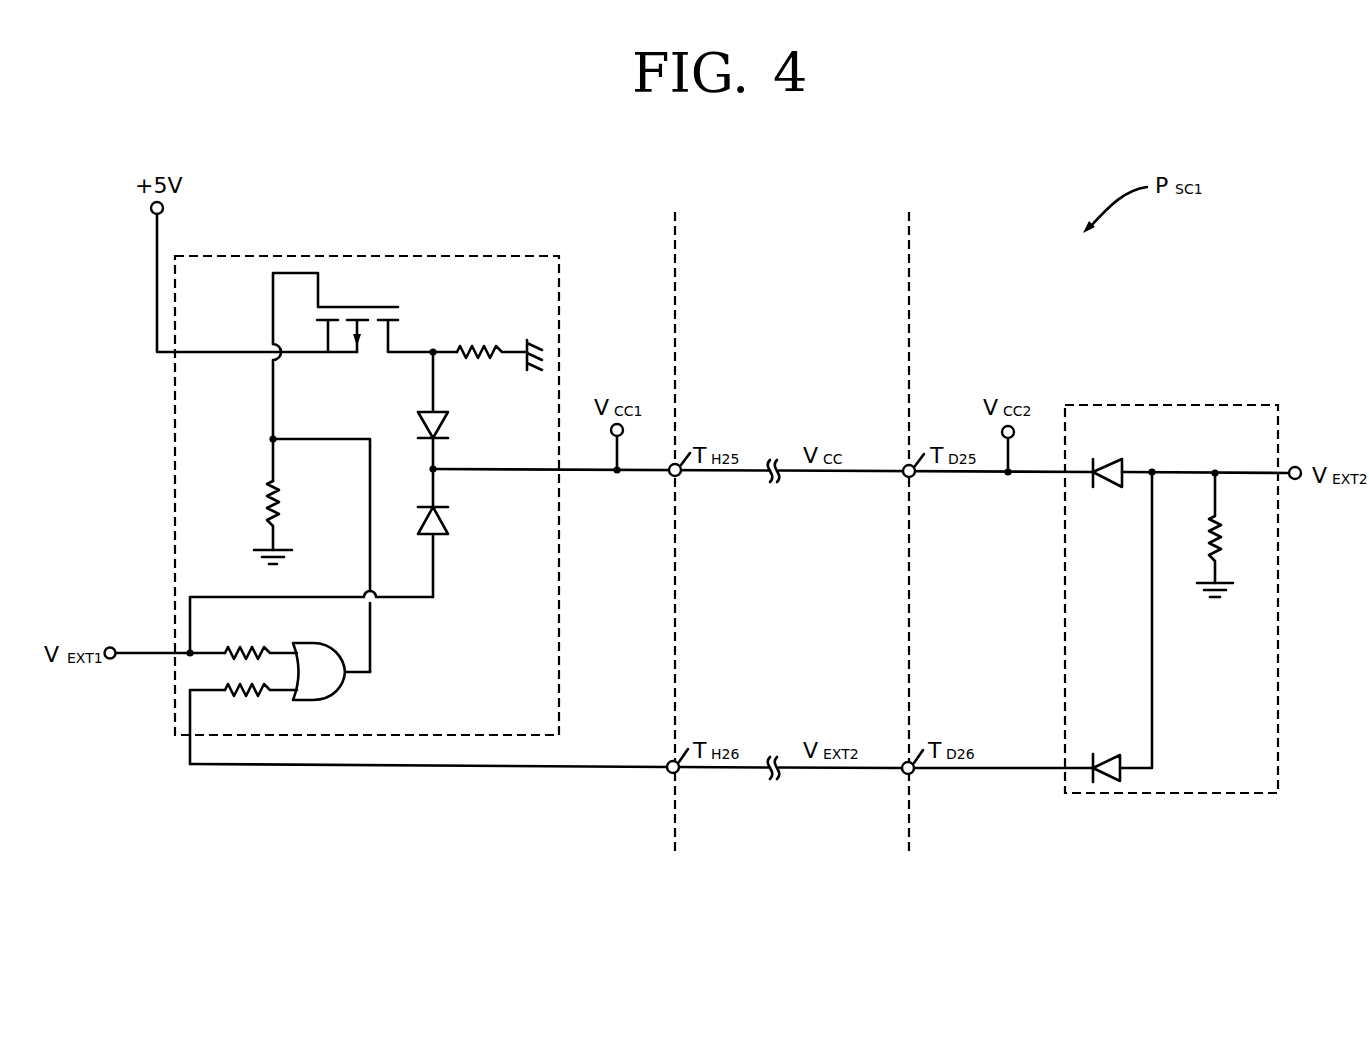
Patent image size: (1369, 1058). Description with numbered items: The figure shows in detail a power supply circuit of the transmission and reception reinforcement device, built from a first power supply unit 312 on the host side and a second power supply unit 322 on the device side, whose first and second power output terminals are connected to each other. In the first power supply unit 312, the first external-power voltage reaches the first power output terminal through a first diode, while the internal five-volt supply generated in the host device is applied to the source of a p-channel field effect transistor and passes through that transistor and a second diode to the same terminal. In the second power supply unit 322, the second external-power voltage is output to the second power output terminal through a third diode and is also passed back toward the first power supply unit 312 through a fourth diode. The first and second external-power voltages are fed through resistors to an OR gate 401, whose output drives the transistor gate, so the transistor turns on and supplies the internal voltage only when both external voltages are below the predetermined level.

The first power supply unit 312 is at (337, 493).
The second power supply unit 322 is at (1173, 405).
The OR gate 401 is at (333, 692).